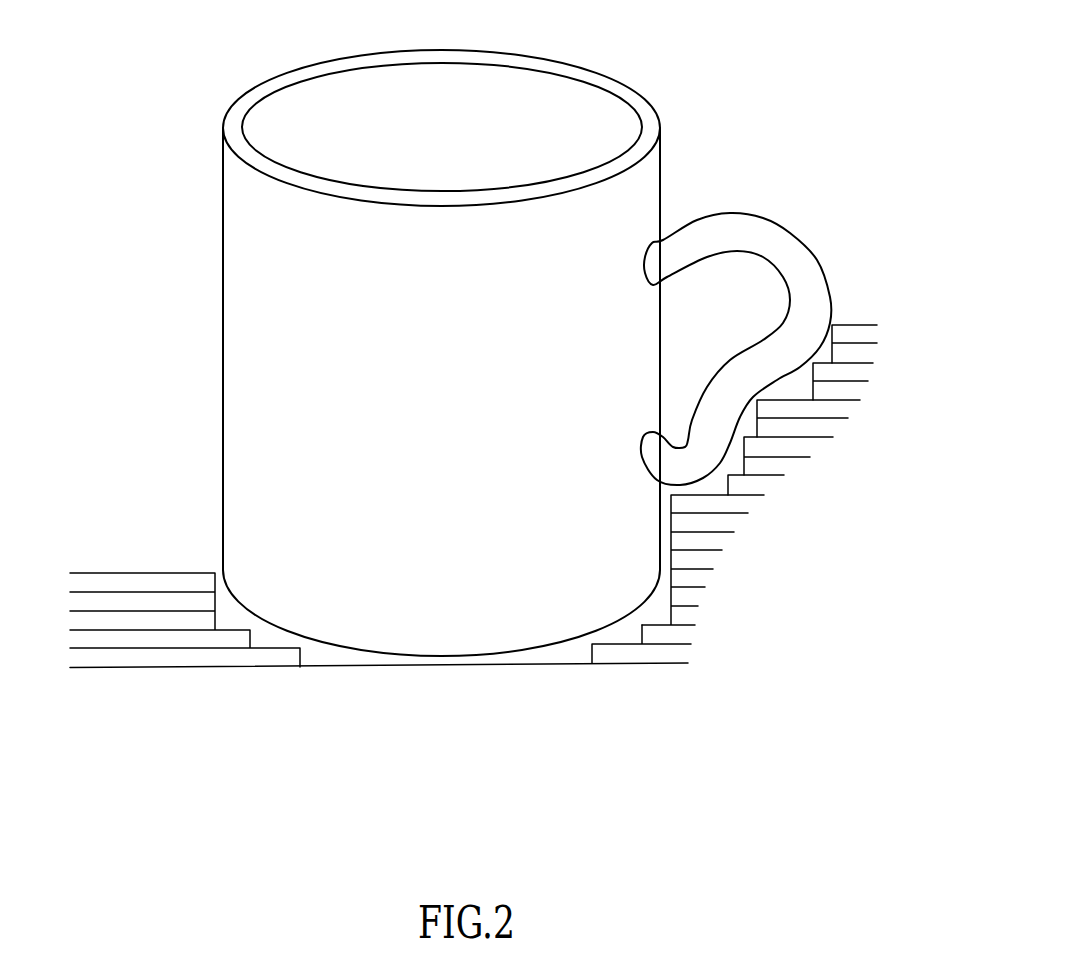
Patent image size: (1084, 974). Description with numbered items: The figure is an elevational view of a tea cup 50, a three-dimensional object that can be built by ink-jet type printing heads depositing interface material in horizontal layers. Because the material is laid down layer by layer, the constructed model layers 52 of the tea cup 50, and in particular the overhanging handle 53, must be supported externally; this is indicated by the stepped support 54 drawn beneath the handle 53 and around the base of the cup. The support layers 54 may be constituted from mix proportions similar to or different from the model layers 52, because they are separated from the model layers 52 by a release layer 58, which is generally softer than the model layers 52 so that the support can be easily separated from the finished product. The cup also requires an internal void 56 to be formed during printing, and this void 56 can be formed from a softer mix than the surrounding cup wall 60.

The tea cup 50 is at (520, 353).
The model layer 52 is at (627, 213).
The handle 53 is at (788, 253).
The stepped support 54 is at (758, 544).
The internal void 56 is at (457, 147).
The release layer 58 is at (618, 645).
The cup wall 60 is at (225, 413).